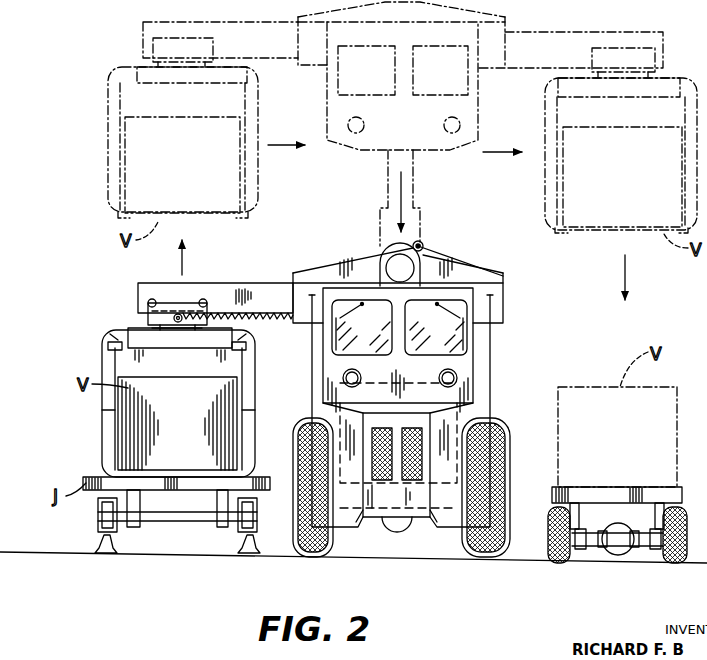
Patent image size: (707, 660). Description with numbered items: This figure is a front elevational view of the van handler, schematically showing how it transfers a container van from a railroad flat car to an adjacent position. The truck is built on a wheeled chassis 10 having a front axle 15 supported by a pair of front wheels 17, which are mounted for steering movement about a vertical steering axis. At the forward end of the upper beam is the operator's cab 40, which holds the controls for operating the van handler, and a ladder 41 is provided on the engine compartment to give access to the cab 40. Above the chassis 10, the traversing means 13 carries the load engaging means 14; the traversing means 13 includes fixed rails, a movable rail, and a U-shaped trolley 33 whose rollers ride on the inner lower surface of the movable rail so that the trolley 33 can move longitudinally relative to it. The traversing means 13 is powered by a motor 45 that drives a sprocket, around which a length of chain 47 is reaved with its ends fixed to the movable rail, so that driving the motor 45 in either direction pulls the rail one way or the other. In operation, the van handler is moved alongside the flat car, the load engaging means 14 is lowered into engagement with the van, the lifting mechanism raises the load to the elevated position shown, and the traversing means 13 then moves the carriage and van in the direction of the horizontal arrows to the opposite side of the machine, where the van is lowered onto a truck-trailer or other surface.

The wheeled chassis 10 is at (411, 419).
The traversing means 13 is at (240, 285).
The load engaging means 14 is at (112, 338).
The front axle 15 is at (449, 514).
The front wheels 17 is at (307, 550).
The trolley 33 is at (165, 302).
The operator's cab 40 is at (462, 363).
The ladder 41 is at (490, 384).
The motor 45 is at (420, 244).
The chain 47 is at (453, 262).